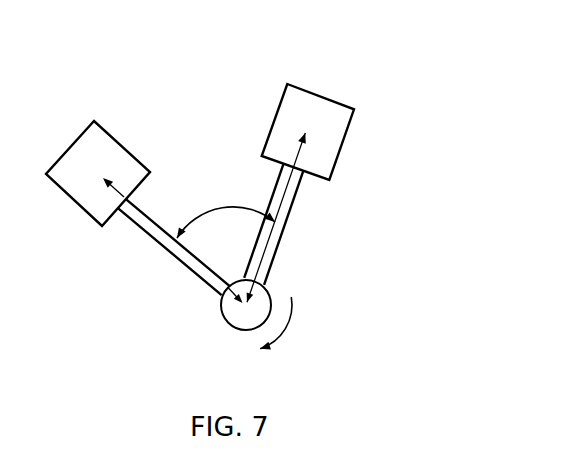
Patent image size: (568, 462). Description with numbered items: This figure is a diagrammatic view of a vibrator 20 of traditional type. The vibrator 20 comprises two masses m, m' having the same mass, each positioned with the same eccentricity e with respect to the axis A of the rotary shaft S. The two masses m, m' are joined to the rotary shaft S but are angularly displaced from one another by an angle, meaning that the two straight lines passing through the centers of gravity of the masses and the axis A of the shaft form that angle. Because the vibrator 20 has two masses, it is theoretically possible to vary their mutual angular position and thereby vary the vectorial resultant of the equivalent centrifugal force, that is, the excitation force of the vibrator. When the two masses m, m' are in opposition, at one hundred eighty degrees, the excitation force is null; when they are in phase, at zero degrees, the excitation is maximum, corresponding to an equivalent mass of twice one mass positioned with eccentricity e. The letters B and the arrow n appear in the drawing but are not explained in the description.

The vibrator 20 is at (200, 100).
The mass m is at (75, 192).
The mass m' is at (344, 133).
The centrifugal force direction B is at (202, 203).
The eccentricity e is at (145, 215).
The rotary shaft S is at (268, 296).
The axis A is at (240, 310).
The rotation direction n is at (292, 325).